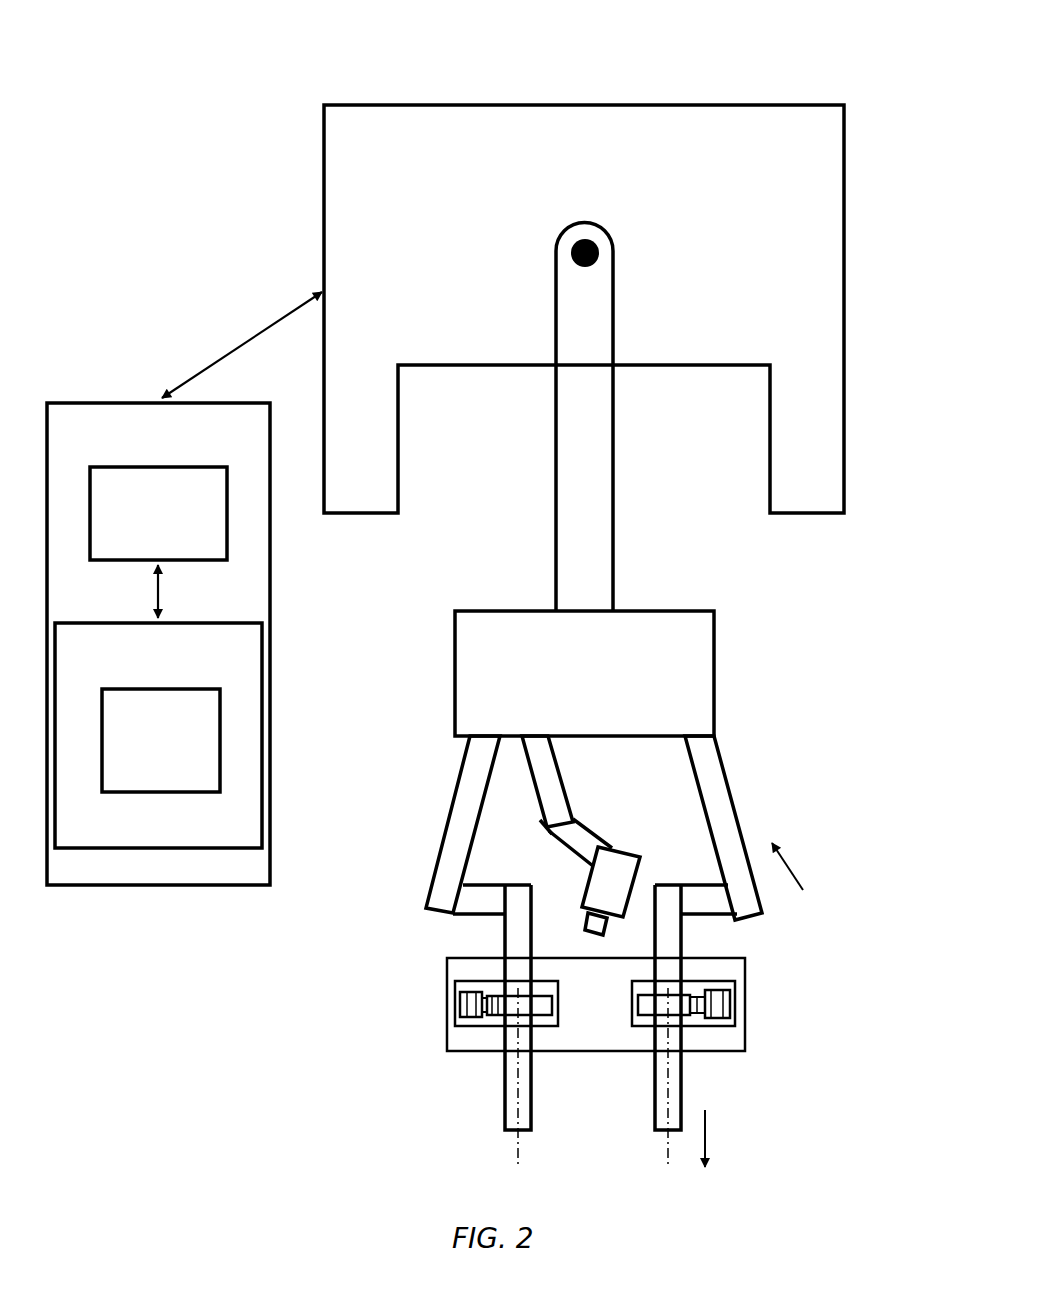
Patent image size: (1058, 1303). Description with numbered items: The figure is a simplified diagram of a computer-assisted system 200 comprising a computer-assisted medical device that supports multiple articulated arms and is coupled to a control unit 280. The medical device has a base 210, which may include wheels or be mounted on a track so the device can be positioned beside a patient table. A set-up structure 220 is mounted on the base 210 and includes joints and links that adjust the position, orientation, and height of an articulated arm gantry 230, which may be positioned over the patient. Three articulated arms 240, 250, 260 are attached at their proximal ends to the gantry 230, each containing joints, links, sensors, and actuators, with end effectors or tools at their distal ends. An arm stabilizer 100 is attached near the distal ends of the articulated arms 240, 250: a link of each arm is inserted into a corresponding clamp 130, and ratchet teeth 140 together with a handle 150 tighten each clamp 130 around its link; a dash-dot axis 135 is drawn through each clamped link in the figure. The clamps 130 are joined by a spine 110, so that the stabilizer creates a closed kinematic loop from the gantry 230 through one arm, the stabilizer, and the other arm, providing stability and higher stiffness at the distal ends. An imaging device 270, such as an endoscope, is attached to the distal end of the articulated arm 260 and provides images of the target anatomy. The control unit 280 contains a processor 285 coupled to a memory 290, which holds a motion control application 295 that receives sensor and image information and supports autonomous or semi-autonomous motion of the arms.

The computer-assisted system 200 is at (75, 50).
The base 210 is at (790, 290).
The set-up structure 220 is at (590, 568).
The articulated arm gantry 230 is at (695, 660).
The articulated arm 240 is at (768, 810).
The articulated arm 250 is at (422, 870).
The articulated arm 260 is at (585, 808).
The imaging device 270 is at (618, 873).
The control unit 280 is at (184, 588).
The processor 285 is at (158, 513).
The memory 290 is at (158, 735).
The motion control application 295 is at (161, 740).
The arm stabilizer 100 is at (586, 1047).
The spine 110 is at (493, 1053).
The clamp 130 is at (520, 1025).
The rod axis 135 is at (519, 1168).
The ratchet teeth 140 is at (493, 1018).
The handle 150 is at (458, 1006).